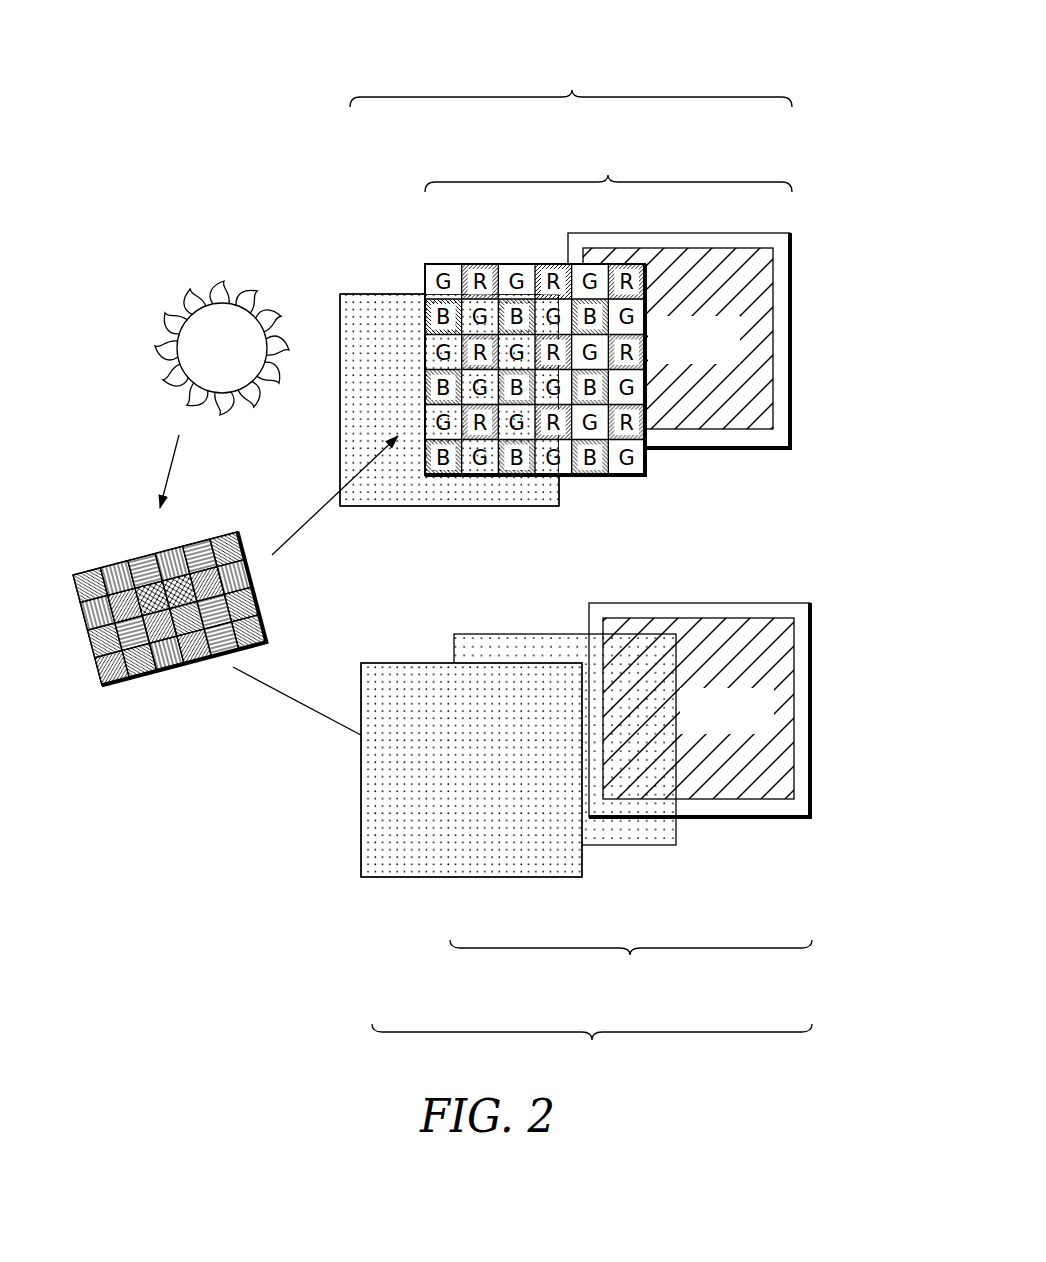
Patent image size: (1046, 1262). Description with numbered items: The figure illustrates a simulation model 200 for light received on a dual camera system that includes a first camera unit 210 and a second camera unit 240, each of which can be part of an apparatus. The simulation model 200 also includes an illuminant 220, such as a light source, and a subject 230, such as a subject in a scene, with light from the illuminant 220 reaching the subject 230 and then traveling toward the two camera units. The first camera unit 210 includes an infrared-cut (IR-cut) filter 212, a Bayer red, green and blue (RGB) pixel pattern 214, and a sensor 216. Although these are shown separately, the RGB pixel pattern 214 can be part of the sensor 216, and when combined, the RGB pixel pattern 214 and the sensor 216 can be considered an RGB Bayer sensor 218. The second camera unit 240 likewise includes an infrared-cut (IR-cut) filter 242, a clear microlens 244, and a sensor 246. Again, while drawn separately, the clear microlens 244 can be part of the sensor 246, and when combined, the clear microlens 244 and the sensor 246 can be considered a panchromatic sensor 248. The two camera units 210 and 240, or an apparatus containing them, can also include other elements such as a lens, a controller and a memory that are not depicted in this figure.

The simulation model 200 is at (820, 56).
The first camera unit 210 is at (571, 85).
The infrared-cut (IR-cut) filter 212 is at (355, 293).
The Bayer Red, Green, and Blue (RGB) pixel pattern 214 is at (435, 263).
The sensor 216 is at (774, 233).
The RGB Bayer sensor 218 is at (608, 169).
The illuminant 220 is at (208, 300).
The subject 230 is at (110, 563).
The second camera unit 240 is at (592, 1047).
The infrared-cut (IR-cut) filter 242 is at (366, 662).
The clear microlens 244 is at (466, 633).
The sensor 246 is at (612, 601).
The panchromatic sensor 248 is at (631, 963).